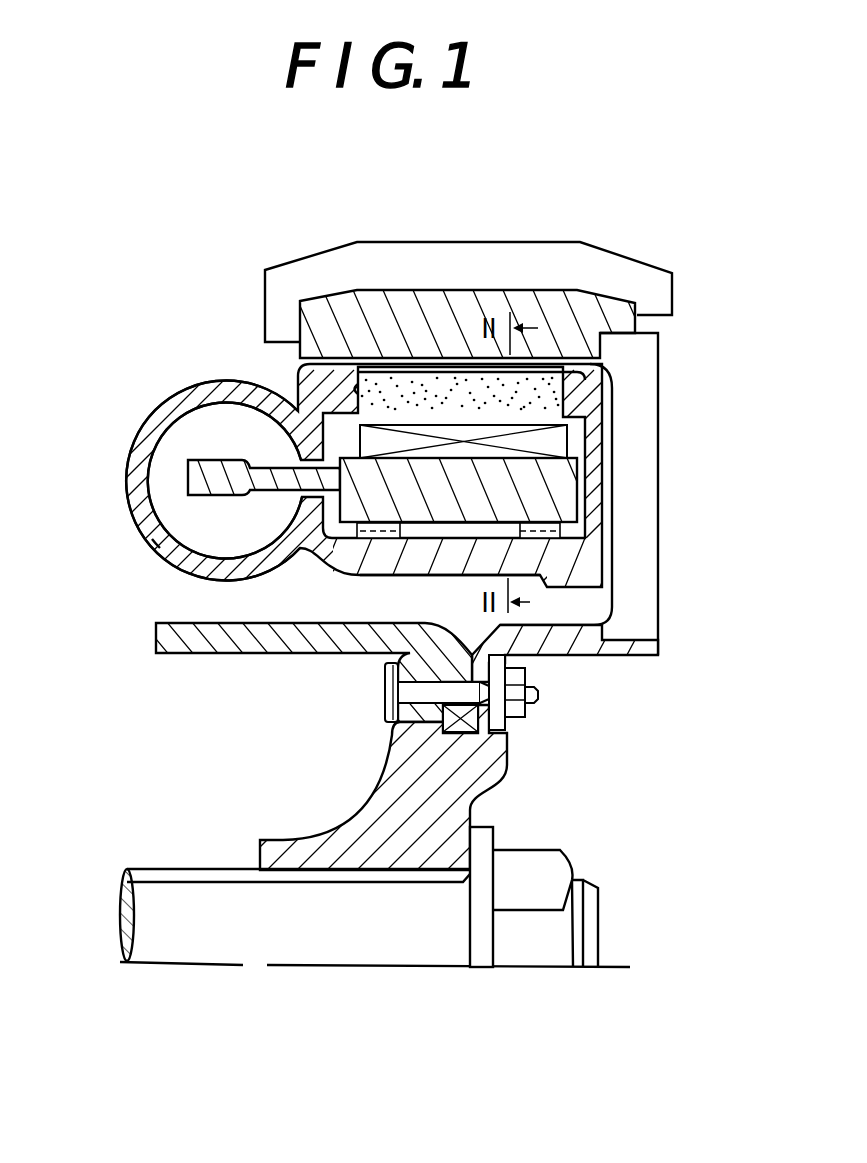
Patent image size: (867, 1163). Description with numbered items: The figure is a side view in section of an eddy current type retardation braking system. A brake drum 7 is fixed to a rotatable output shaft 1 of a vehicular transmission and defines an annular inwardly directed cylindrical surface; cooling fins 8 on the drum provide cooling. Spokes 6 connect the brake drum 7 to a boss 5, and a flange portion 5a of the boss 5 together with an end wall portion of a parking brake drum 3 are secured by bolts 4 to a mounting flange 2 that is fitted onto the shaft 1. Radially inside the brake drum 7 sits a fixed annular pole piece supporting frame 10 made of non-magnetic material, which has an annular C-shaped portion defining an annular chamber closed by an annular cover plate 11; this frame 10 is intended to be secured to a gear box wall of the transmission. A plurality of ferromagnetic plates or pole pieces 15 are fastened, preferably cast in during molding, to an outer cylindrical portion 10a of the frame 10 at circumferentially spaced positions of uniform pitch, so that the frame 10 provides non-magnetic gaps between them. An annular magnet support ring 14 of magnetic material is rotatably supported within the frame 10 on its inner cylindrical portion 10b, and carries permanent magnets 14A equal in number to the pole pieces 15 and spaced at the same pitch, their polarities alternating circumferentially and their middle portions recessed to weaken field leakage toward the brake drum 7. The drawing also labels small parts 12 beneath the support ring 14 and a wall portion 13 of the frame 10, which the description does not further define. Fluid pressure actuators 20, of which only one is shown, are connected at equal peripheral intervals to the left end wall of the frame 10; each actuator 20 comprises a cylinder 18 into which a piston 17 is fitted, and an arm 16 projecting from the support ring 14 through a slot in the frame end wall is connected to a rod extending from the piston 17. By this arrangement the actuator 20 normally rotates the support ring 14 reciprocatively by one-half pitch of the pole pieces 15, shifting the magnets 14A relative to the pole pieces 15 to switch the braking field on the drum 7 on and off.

The rotatable output shaft 1 is at (183, 913).
The mounting flange 2 is at (397, 778).
The parking brake drum 3 is at (253, 641).
The bolts 4 is at (532, 694).
The boss 5 is at (580, 639).
The flange portion 5a is at (505, 729).
The spokes 6 is at (642, 557).
The brake drum 7 is at (621, 312).
The cooling fins 8 is at (621, 281).
The fixed annular pole piece supporting frame 10 is at (283, 373).
The outer cylindrical portion 10a is at (322, 378).
The inner cylindrical portion 10b is at (429, 566).
The annular cover plate 11 is at (593, 460).
The pole pieces 12 is at (544, 524).
The housing wall portion 13 is at (381, 385).
The magnet support ring 14 is at (423, 507).
The permanent magnets 14A is at (553, 438).
The pole pieces 15 is at (427, 384).
The arm 16 is at (263, 475).
The piston 17 is at (185, 435).
The cylinder 18 is at (153, 540).
The fluid pressure actuators 20 is at (123, 497).